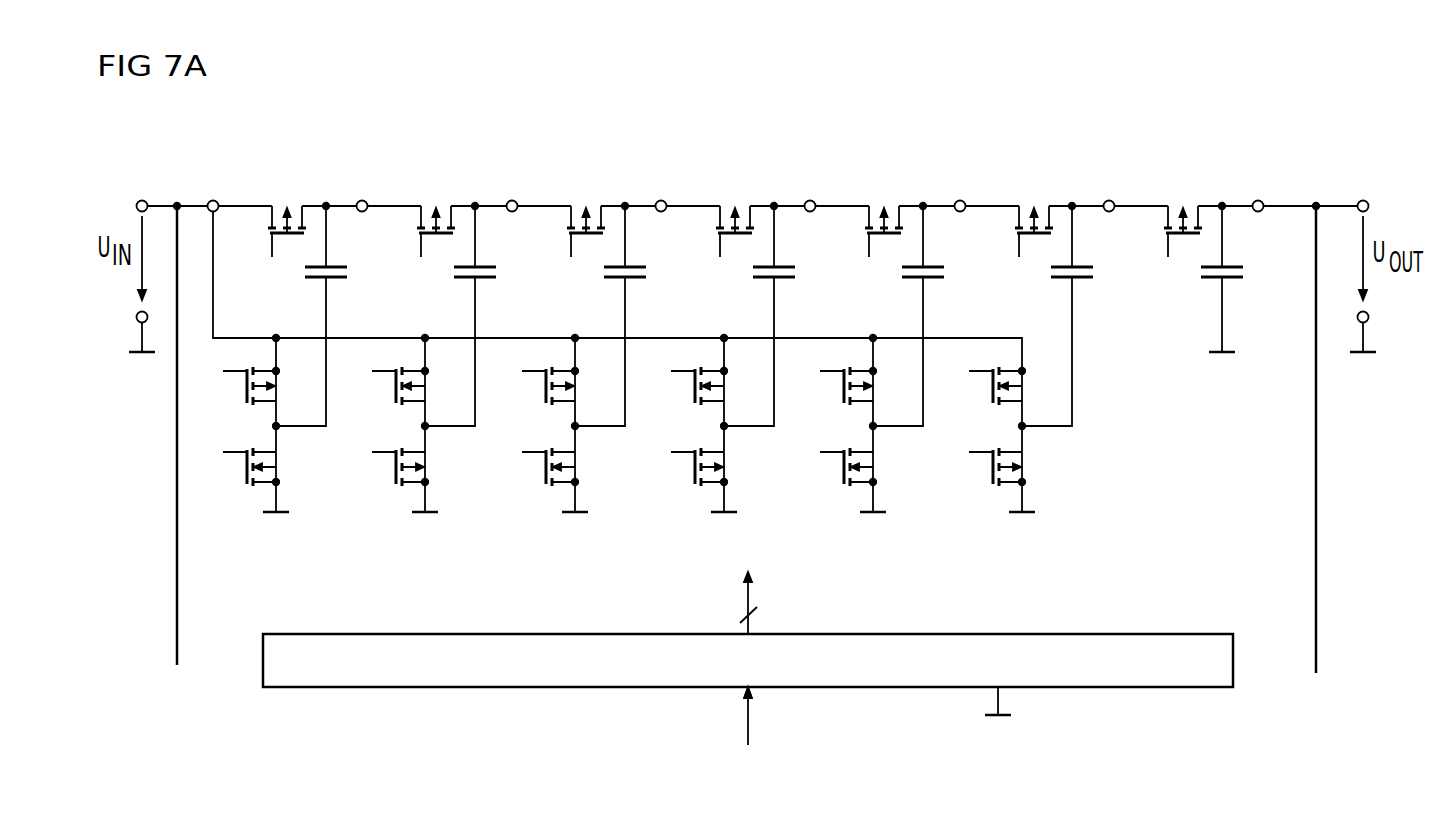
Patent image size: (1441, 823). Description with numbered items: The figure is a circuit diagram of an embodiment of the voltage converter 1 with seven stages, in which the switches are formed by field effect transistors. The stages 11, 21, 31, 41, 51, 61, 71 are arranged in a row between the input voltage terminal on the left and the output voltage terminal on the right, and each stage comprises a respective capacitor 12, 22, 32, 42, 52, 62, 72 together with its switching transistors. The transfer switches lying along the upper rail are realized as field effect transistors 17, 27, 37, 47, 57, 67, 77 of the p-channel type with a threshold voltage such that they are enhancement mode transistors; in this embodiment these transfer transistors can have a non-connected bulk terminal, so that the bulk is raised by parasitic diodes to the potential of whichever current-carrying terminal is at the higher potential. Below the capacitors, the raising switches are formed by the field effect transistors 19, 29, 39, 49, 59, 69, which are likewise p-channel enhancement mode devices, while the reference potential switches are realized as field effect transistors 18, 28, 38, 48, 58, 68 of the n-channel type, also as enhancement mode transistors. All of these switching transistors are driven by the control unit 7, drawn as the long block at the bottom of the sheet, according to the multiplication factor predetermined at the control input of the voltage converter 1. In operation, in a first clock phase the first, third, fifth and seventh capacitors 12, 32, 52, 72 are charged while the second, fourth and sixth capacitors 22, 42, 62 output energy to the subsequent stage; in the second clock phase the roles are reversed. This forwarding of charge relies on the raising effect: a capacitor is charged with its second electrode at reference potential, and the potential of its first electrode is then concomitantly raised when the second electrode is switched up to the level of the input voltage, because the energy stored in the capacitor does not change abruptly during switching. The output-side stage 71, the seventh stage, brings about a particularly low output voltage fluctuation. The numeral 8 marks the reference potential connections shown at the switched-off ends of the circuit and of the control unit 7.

The voltage converter 1 is at (1257, 114).
The first stage 11 is at (359, 163).
The second stage 21 is at (508, 163).
The third stage 31 is at (658, 163).
The fourth stage 41 is at (807, 163).
The fifth stage 51 is at (956, 163).
The sixth stage 61 is at (1106, 163).
The seventh stage 71 is at (1255, 163).
The first capacitor 12 is at (340, 316).
The second capacitor 22 is at (489, 316).
The third capacitor 32 is at (639, 316).
The fourth capacitor 42 is at (788, 316).
The fifth capacitor 52 is at (937, 316).
The sixth capacitor 62 is at (1086, 316).
The seventh capacitor 72 is at (1252, 278).
The transfer switch field effect transistor 17 is at (287, 252).
The transfer switch field effect transistor 27 is at (436, 252).
The transfer switch field effect transistor 37 is at (586, 252).
The transfer switch field effect transistor 47 is at (735, 252).
The transfer switch field effect transistor 57 is at (884, 252).
The transfer switch field effect transistor 67 is at (1034, 252).
The transfer switch field effect transistor 77 is at (1183, 252).
The raising switch field effect transistor 19 is at (247, 388).
The reference potential switch field effect transistor 18 is at (247, 469).
The raising switch field effect transistor 29 is at (396, 388).
The reference potential switch field effect transistor 28 is at (396, 469).
The raising switch field effect transistor 39 is at (546, 388).
The reference potential switch field effect transistor 38 is at (546, 469).
The raising switch field effect transistor 49 is at (695, 388).
The reference potential switch field effect transistor 48 is at (695, 469).
The raising switch field effect transistor 59 is at (844, 388).
The reference potential switch field effect transistor 58 is at (844, 469).
The raising switch field effect transistor 69 is at (993, 388).
The reference potential switch field effect transistor 68 is at (993, 469).
The control unit 7 is at (1233, 660).
The ground / reference potential 8 is at (749, 566).